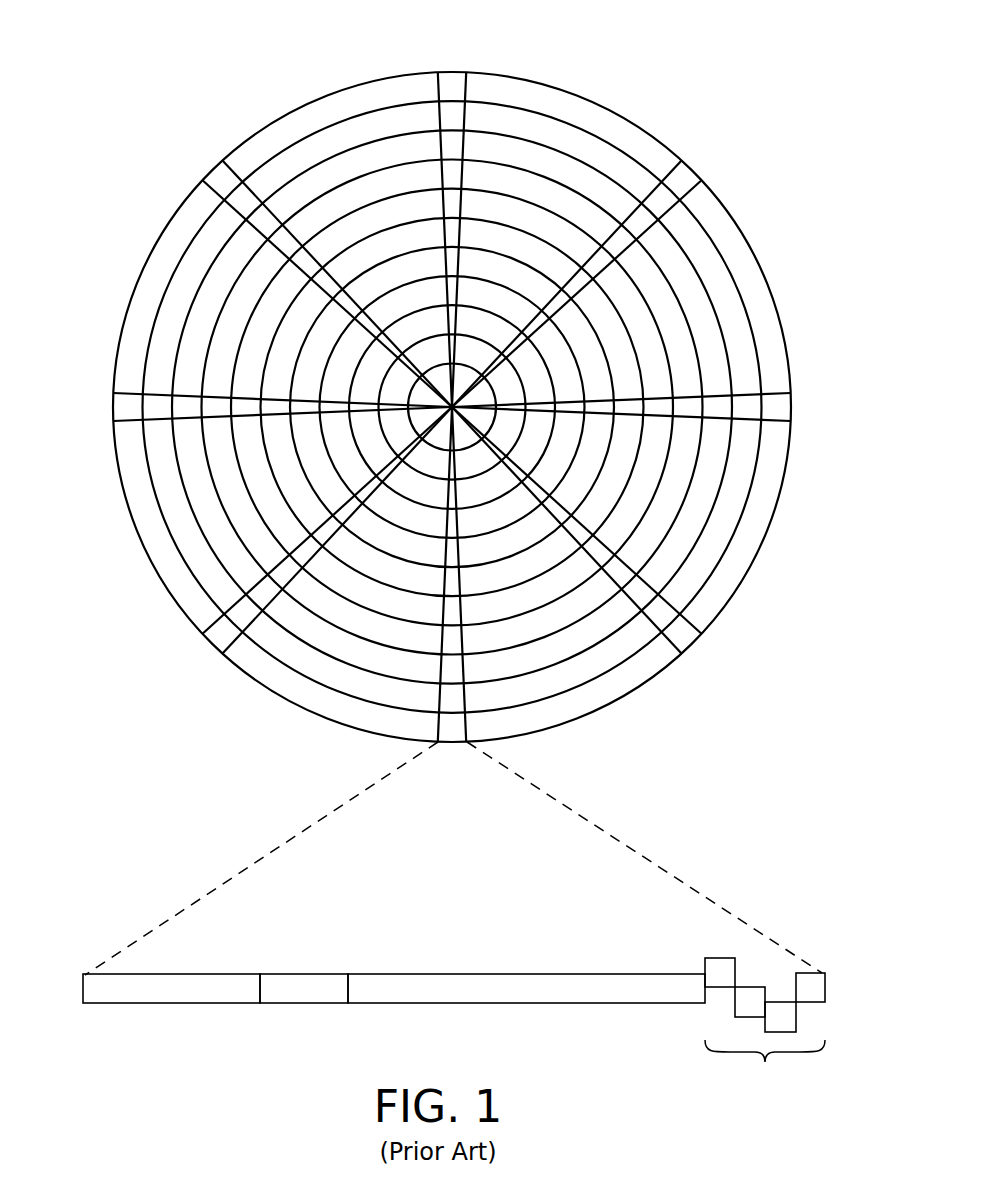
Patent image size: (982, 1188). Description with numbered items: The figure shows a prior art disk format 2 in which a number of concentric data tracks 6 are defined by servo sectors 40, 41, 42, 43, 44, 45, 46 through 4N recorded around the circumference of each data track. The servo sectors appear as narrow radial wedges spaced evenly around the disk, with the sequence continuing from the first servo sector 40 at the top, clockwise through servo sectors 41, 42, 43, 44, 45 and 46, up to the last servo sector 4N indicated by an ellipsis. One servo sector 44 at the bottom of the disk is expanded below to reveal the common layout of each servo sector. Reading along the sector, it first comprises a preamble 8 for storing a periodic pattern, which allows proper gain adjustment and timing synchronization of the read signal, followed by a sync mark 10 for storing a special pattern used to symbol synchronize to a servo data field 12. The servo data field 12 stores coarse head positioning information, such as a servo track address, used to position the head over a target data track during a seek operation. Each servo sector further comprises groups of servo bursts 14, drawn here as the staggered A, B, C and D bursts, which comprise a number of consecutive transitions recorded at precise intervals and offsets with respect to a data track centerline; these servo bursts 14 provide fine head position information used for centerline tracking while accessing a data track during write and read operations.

The disk format 2 is at (198, 75).
The data tracks 6 is at (567, 138).
The servo sector 40 is at (452, 80).
The servo sector 41 is at (683, 178).
The servo sector 42 is at (785, 408).
The servo sector 43 is at (685, 635).
The servo sector 44 is at (302, 818).
The servo sector 45 is at (217, 640).
The servo sector 46 is at (112, 402).
The servo sector 4N is at (217, 170).
The preamble 8 is at (150, 1005).
The sync mark 10 is at (301, 1005).
The servo data field 12 is at (512, 1003).
The servo bursts 14 is at (686, 938).